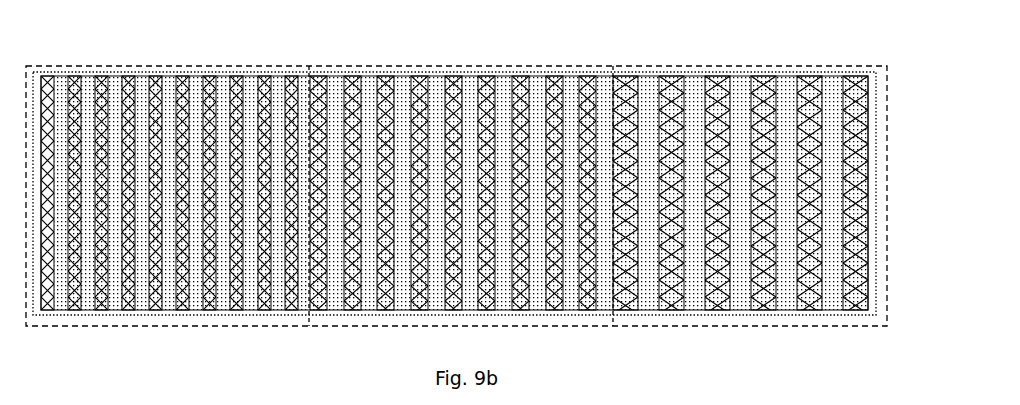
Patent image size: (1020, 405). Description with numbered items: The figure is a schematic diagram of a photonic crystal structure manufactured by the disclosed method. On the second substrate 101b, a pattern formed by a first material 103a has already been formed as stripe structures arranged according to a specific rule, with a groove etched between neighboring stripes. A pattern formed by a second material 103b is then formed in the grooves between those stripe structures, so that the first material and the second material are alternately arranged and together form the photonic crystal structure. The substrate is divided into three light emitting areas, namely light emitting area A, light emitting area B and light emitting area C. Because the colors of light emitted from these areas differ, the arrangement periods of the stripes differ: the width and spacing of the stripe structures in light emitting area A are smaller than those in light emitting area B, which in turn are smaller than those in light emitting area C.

The second substrate 101b is at (484, 208).
The pattern formed by a first material 103a is at (886, 193).
The pattern formed by a second material 103b is at (875, 193).
The light emitting area A is at (175, 174).
The light emitting area B is at (461, 174).
The light emitting area C is at (771, 174).